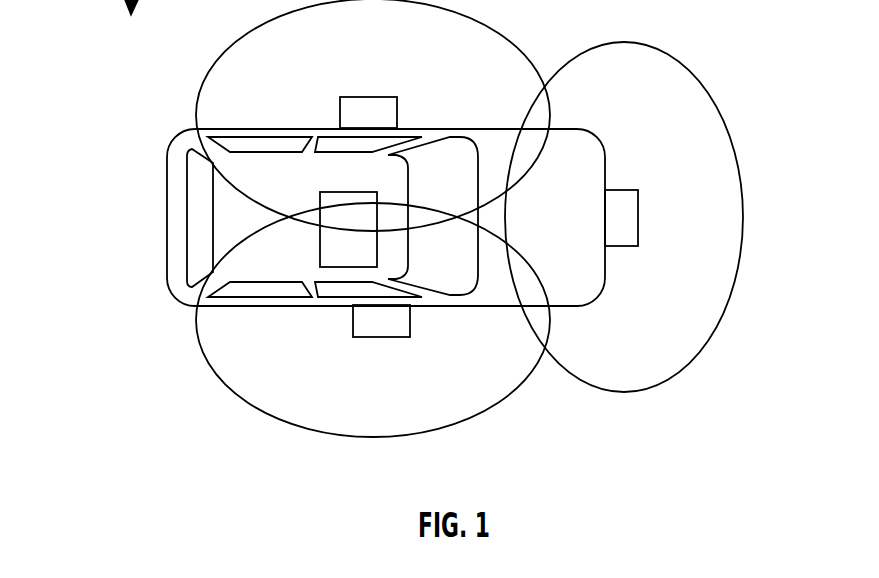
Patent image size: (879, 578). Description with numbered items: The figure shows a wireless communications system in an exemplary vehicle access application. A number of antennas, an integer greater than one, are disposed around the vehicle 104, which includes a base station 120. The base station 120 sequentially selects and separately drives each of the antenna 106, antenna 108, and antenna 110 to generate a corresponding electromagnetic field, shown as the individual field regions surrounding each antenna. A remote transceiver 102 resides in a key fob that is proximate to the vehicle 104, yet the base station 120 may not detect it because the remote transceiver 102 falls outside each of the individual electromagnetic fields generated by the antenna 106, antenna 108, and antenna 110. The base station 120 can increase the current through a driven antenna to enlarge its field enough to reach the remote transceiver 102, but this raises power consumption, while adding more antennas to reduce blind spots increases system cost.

The remote transceiver 102 is at (410, 258).
The vehicle 104 is at (585, 128).
The antenna 106 is at (410, 333).
The antenna 108 is at (618, 190).
The antenna 110 is at (398, 124).
The base station 120 is at (363, 238).